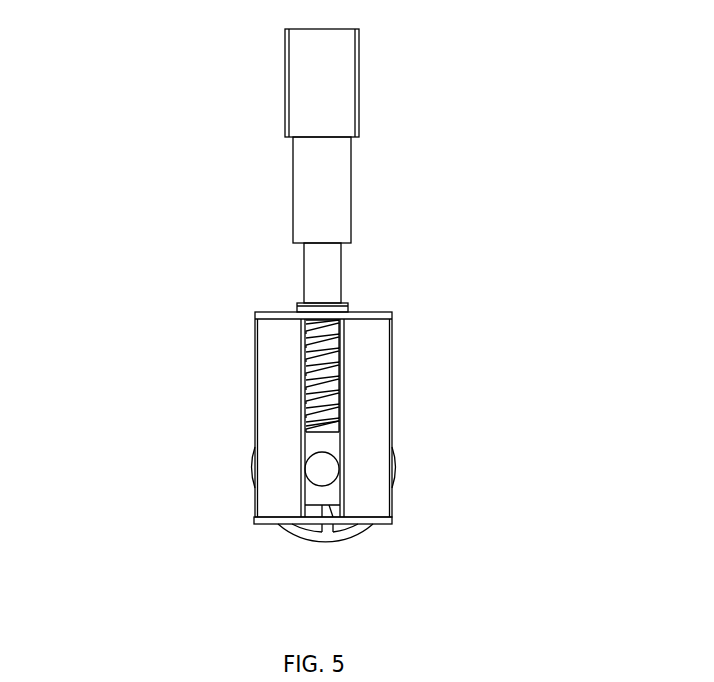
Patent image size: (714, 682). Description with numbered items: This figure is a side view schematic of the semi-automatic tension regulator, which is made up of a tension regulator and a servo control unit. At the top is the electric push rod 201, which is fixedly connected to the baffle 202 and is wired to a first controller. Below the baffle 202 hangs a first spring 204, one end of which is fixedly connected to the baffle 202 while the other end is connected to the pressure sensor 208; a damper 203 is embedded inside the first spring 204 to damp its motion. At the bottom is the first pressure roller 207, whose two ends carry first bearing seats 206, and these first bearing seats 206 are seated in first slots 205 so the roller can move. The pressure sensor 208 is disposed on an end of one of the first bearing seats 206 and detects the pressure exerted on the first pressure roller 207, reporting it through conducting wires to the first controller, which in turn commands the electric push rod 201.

The electric push rod 201 is at (441, 136).
The baffle 202 is at (184, 180).
The damper 203 is at (182, 355).
The first spring 204 is at (179, 376).
The first slot 205 is at (425, 359).
The first bearing seat 206 is at (451, 429).
The first pressure roller 207 is at (438, 547).
The pressure sensor 208 is at (179, 493).